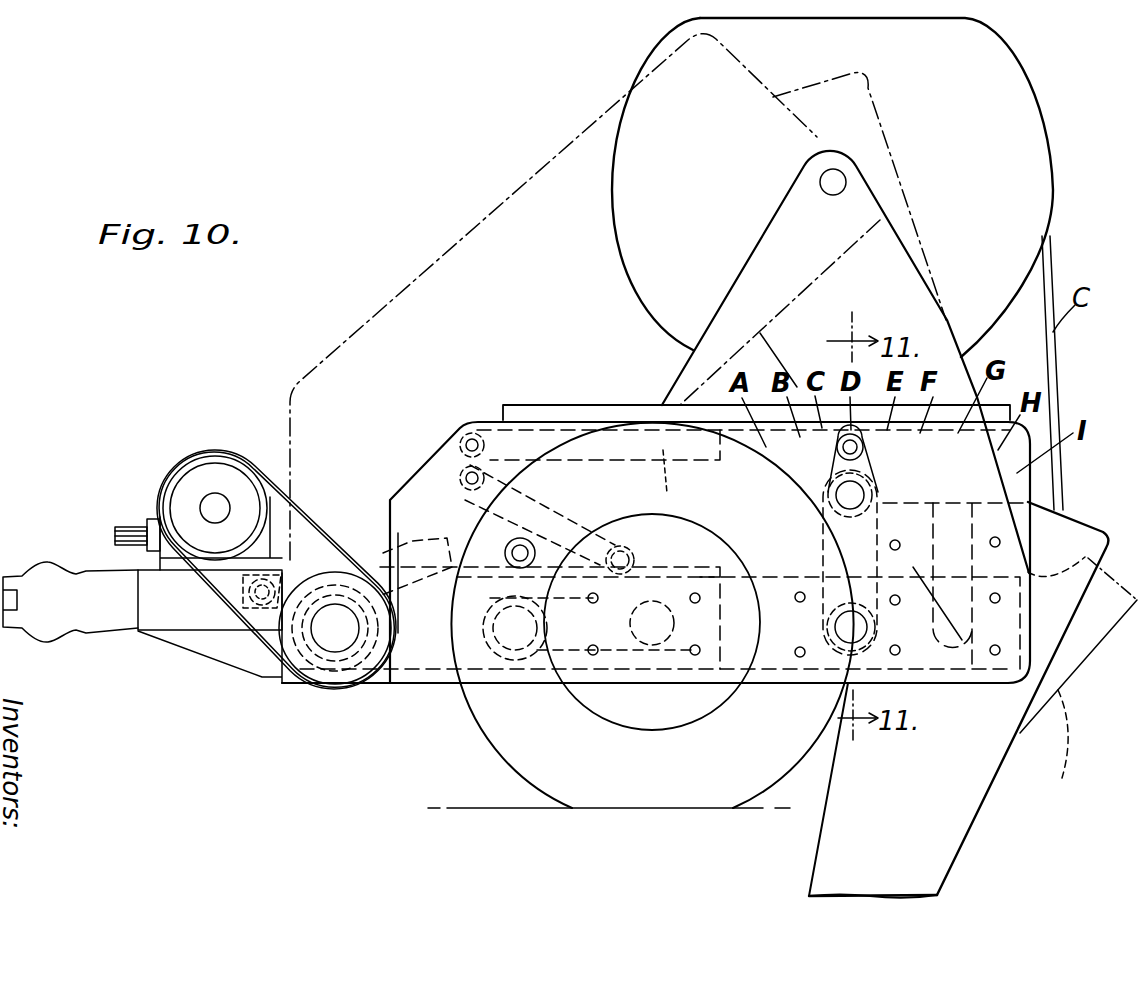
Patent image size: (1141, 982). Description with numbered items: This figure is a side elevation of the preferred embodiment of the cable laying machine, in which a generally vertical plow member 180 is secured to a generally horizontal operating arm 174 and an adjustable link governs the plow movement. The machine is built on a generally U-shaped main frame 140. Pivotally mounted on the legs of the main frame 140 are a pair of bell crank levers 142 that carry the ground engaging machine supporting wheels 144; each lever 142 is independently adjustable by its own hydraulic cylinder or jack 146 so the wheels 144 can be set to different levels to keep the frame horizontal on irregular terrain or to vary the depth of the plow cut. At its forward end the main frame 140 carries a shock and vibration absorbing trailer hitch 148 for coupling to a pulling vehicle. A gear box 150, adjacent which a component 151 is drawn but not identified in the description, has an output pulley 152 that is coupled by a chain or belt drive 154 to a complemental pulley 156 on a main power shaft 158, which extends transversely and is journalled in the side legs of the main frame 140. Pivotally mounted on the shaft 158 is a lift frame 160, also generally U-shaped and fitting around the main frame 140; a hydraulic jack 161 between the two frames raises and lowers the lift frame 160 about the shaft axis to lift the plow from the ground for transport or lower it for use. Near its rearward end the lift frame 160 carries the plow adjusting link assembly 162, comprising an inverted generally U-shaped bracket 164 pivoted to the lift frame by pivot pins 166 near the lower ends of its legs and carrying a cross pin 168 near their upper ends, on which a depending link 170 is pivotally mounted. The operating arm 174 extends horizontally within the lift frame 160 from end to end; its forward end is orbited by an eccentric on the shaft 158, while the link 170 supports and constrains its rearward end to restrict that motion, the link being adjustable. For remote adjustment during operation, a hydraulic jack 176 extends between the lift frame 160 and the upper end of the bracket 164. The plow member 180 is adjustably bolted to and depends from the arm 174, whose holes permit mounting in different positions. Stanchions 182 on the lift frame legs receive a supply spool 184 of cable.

The main frame 140 is at (207, 645).
The bell crank levers 142 is at (537, 666).
The ground engaging machine supporting wheels 144 is at (523, 763).
The hydraulic cylinder or jack 146 is at (422, 547).
The trailer hitch 148 is at (43, 576).
The gear box 150 is at (264, 466).
The motor shaft 151 is at (127, 527).
The output pulley 152 is at (195, 483).
The chain or belt drive 154 is at (252, 617).
The complemental pulley 156 is at (350, 668).
The main power shaft 158 is at (333, 635).
The lift frame 160 is at (426, 278).
The hydraulic jack 161 is at (566, 498).
The plow adjusting link assembly 162 is at (812, 515).
The inverted generally U-shaped bracket 164 is at (870, 453).
The pivot pins 166 is at (836, 636).
The cross pin 168 is at (868, 493).
The depending link 170 is at (852, 549).
The operating arm 174 is at (772, 665).
The hydraulic jack 176 is at (666, 452).
The plow member 180 is at (970, 790).
The stanchions 182 is at (762, 259).
The supply spool 184 is at (1028, 132).